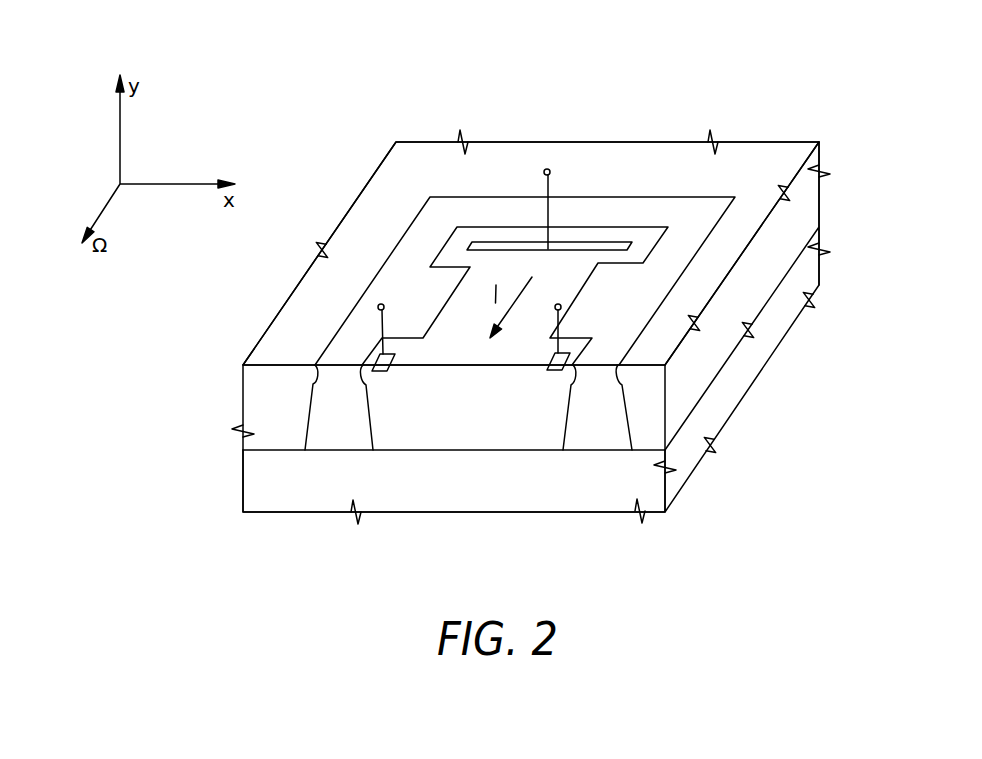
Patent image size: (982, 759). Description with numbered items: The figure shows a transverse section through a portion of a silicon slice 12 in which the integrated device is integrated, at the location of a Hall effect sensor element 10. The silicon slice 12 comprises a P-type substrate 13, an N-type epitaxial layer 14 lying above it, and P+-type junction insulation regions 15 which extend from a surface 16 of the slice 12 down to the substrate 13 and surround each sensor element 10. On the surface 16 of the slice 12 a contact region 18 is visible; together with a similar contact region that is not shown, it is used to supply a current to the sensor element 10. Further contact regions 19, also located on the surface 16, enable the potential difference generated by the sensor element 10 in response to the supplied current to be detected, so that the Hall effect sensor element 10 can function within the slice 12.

The Hall effect sensor element 10 is at (725, 187).
The silicon slice 12 is at (820, 207).
The P-type substrate 13 is at (570, 493).
The N-type epitaxial layer 14 is at (447, 322).
The P+-type junction insulation regions 15 is at (608, 208).
The surface 16 is at (272, 365).
The contact region 18 is at (547, 169).
The contact regions 19 is at (378, 306).